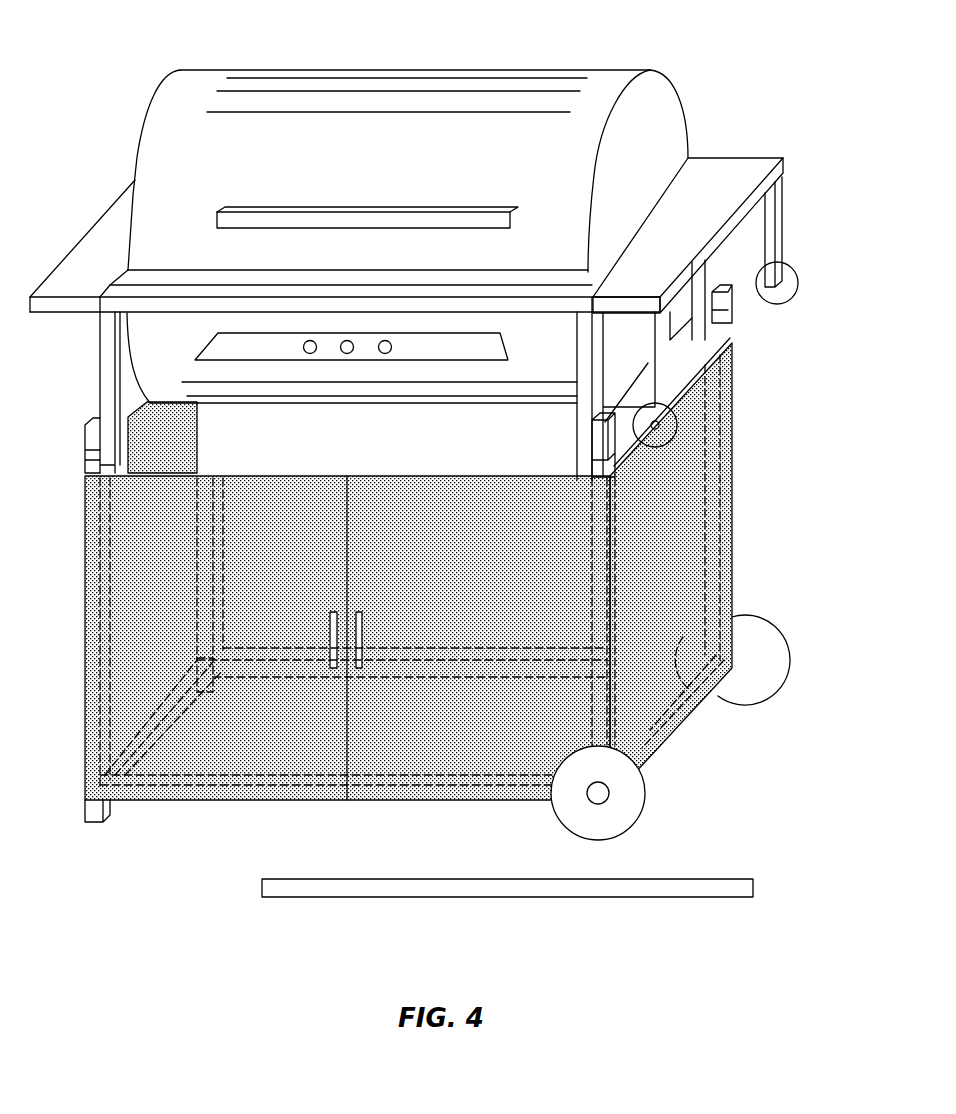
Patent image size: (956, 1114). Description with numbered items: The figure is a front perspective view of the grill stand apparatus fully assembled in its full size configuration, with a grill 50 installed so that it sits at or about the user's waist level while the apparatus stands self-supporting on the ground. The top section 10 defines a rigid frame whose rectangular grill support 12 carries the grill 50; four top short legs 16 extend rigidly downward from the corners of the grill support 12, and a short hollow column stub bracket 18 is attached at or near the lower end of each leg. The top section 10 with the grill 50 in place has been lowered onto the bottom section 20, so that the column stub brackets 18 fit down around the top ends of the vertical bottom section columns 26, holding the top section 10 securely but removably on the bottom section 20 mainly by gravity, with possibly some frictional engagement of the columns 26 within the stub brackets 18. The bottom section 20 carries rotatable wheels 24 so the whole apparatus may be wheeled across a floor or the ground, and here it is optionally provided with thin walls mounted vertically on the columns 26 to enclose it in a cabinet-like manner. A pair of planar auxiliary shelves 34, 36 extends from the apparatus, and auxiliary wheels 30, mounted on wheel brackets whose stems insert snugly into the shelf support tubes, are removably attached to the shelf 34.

The top section 10 is at (133, 35).
The grill support 12 is at (247, 303).
The top short legs 16 is at (108, 385).
The column stub brackets 18 is at (92, 440).
The bottom section 20 is at (216, 853).
The wheels 24 is at (633, 794).
The bottom section columns 26 is at (97, 653).
The auxiliary wheels 30 is at (793, 277).
The auxiliary shelf 34 is at (762, 157).
The auxiliary shelf 36 is at (97, 230).
The grill 50 is at (610, 83).